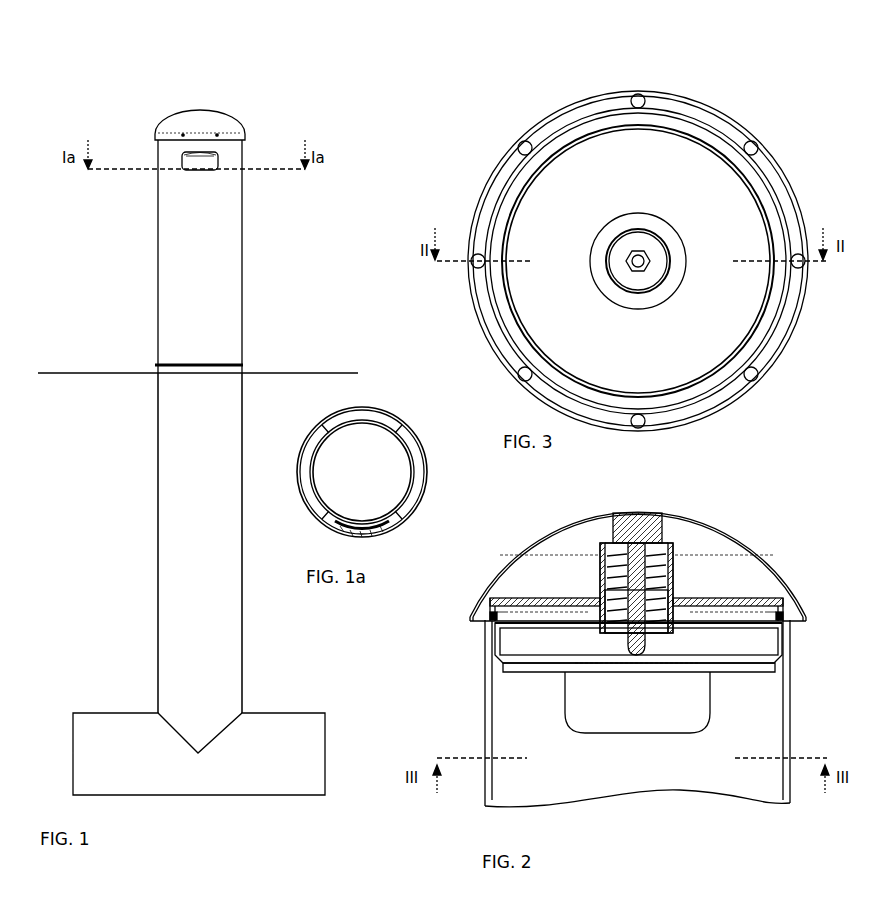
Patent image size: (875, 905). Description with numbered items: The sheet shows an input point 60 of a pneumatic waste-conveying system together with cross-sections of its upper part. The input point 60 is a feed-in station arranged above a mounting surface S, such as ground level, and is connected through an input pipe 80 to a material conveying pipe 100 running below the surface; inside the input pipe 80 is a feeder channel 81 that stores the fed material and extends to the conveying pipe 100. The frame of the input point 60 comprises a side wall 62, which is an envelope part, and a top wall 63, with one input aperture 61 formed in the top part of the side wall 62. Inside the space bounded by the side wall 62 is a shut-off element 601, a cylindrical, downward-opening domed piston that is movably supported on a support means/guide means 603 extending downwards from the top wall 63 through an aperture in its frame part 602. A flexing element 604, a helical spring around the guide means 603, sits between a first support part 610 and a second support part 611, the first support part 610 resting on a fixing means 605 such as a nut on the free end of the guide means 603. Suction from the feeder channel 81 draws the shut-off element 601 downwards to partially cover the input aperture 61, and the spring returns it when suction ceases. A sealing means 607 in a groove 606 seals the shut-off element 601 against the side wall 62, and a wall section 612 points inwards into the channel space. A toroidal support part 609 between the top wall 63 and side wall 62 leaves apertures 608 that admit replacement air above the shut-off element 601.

In FIG. 1, the input point 60 is at (128, 130).
In FIG. 1, the input aperture 61 is at (186, 164).
In FIG. 1A, the input aperture 61 is at (357, 532).
In FIG. 2, the input aperture 61 is at (588, 716).
In FIG. 1, the side wall 62 is at (158, 314).
In FIG. 1A, the side wall 62 is at (304, 454).
In FIG. 3, the side wall 62 is at (483, 328).
In FIG. 2, the side wall 62 is at (485, 746).
In FIG. 1, the top wall 63 is at (186, 122).
In FIG. 2, the top wall 63 is at (690, 524).
In FIG. 1, the input pipe 80 is at (158, 501).
In FIG. 1, the feeder channel 81 is at (206, 575).
In FIG. 1A, the feeder channel 81 is at (372, 489).
In FIG. 1, the material conveying pipe 100 is at (298, 722).
In FIG. 1, the mounting surface S is at (95, 370).
In FIG. 1, the shut-off element 601 is at (218, 156).
In FIG. 2, the shut-off element 601 is at (492, 657).
In FIG. 3, the frame part 602 is at (614, 150).
In FIG. 2, the frame part 602 is at (490, 600).
In FIG. 3, the support means/guide means 603 is at (630, 252).
In FIG. 2, the support means/guide means 603 is at (613, 540).
In FIG. 2, the flexing element 604 is at (600, 562).
In FIG. 3, the fixing means 605 is at (625, 262).
In FIG. 2, the fixing means 605 is at (620, 640).
In FIG. 2, the groove 606 is at (490, 618).
In FIG. 2, the sealing means 607 is at (492, 616).
In FIG. 3, the apertures 608 is at (518, 150).
In FIG. 2, the apertures 608 is at (476, 614).
In FIG. 3, the support part 609 is at (487, 200).
In FIG. 2, the first support part 610 is at (698, 624).
In FIG. 2, the second support part 611 is at (674, 568).
In FIG. 2, the wall section 612 is at (500, 668).